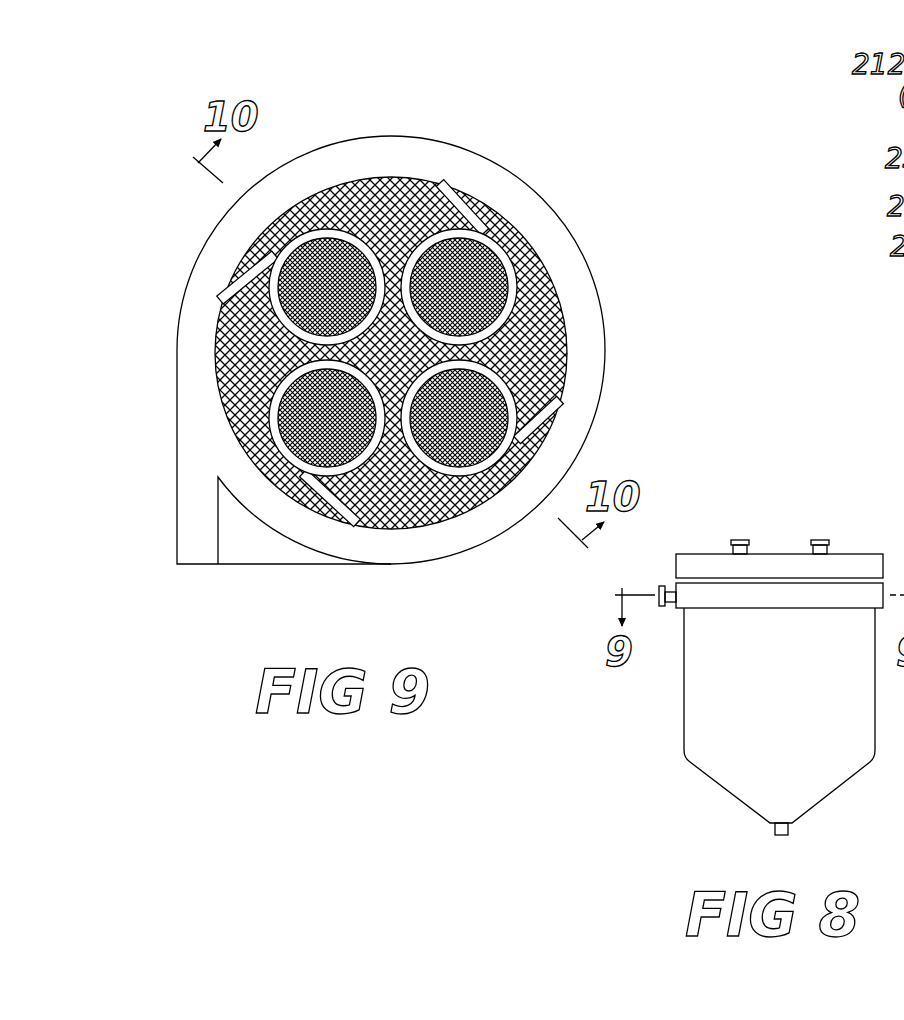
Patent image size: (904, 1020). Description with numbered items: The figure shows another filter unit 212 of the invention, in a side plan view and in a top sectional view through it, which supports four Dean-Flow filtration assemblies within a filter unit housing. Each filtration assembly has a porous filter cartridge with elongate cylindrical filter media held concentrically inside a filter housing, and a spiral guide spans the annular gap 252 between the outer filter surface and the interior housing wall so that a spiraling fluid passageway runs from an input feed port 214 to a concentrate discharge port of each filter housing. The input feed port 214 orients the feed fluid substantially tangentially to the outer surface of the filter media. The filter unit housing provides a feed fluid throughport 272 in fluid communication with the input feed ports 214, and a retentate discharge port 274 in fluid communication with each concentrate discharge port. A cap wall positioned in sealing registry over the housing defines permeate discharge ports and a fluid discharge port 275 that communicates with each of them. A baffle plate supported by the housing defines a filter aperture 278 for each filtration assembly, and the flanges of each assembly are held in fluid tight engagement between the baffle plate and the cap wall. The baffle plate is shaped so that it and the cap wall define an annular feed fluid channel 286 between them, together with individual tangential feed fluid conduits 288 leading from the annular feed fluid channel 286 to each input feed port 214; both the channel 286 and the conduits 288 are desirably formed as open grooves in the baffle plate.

In FIG. 9, the filter unit 212 is at (350, 114).
In FIG. 8, the filter unit 212 is at (633, 753).
In FIG. 9, the input feed port 214 is at (525, 449).
In FIG. 9, the annular gap 252 is at (476, 473).
In FIG. 9, the feed fluid throughport 272 is at (204, 567).
In FIG. 8, the feed fluid throughport 272 is at (661, 609).
In FIG. 8, the retentate discharge port 274 is at (779, 841).
In FIG. 8, the fluid discharge port 275 is at (819, 538).
In FIG. 9, the filter aperture 278 is at (272, 262).
In FIG. 9, the annular feed fluid channel 286 is at (552, 242).
In FIG. 9, the tangential feed fluid conduits 288 is at (463, 192).